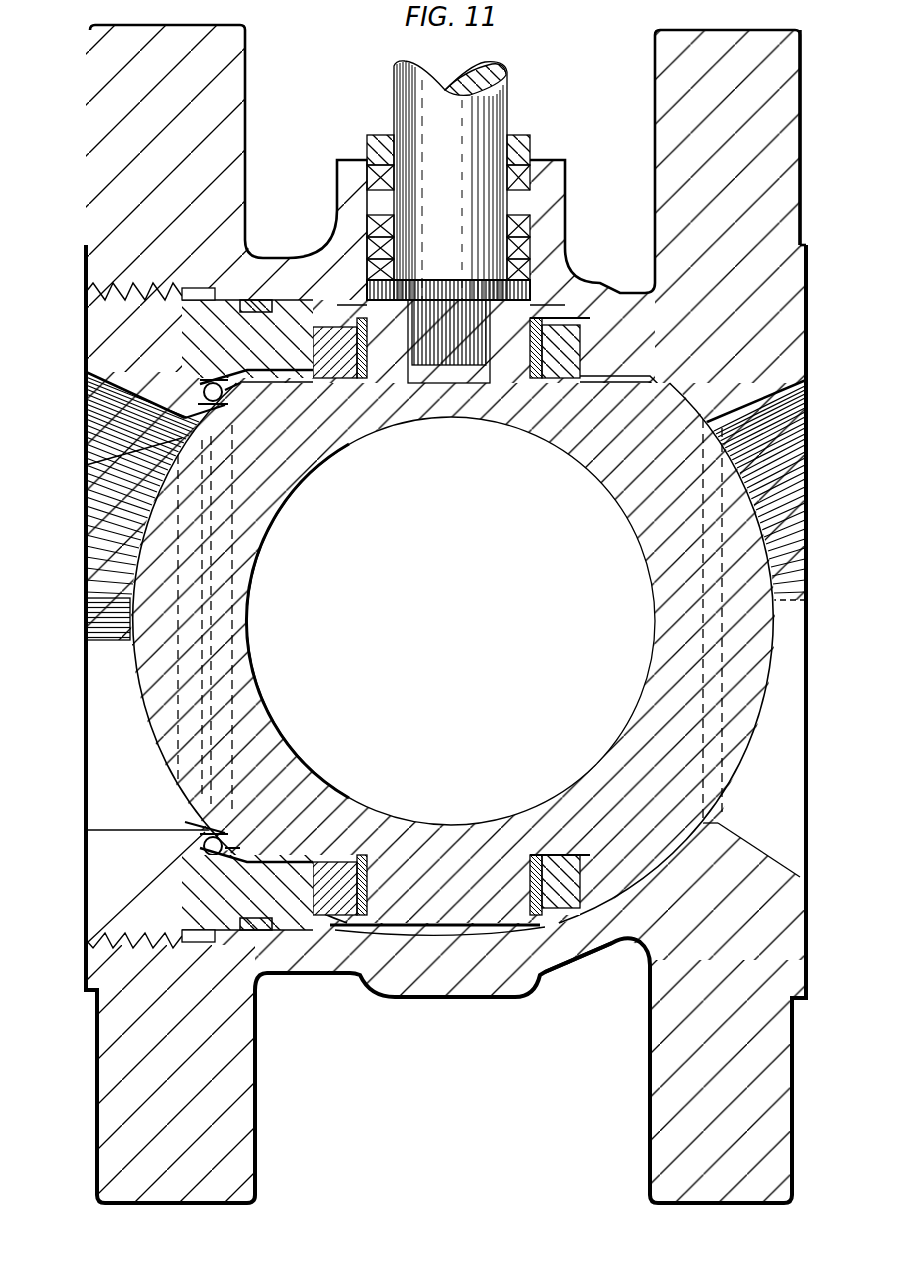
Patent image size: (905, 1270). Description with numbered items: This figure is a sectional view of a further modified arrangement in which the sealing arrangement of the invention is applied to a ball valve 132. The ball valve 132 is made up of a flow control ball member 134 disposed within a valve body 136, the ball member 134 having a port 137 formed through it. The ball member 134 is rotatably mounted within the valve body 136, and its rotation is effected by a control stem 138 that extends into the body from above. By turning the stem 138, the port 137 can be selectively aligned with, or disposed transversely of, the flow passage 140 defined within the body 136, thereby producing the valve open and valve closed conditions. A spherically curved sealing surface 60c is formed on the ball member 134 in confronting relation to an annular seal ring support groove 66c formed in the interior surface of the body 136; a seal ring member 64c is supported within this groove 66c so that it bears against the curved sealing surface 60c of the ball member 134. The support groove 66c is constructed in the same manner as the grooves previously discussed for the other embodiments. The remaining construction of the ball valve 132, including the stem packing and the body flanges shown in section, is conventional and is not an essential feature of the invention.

The ball valve 132 is at (352, 985).
The flow control ball member 134 is at (257, 572).
The valve body 136 is at (565, 945).
The port 137 is at (257, 638).
The control stem 138 is at (450, 385).
The flow passage 140 is at (180, 440).
The spherically curved sealing surface 60c is at (205, 843).
The seal ring member 64c is at (330, 418).
The seal ring support groove 66c is at (213, 385).